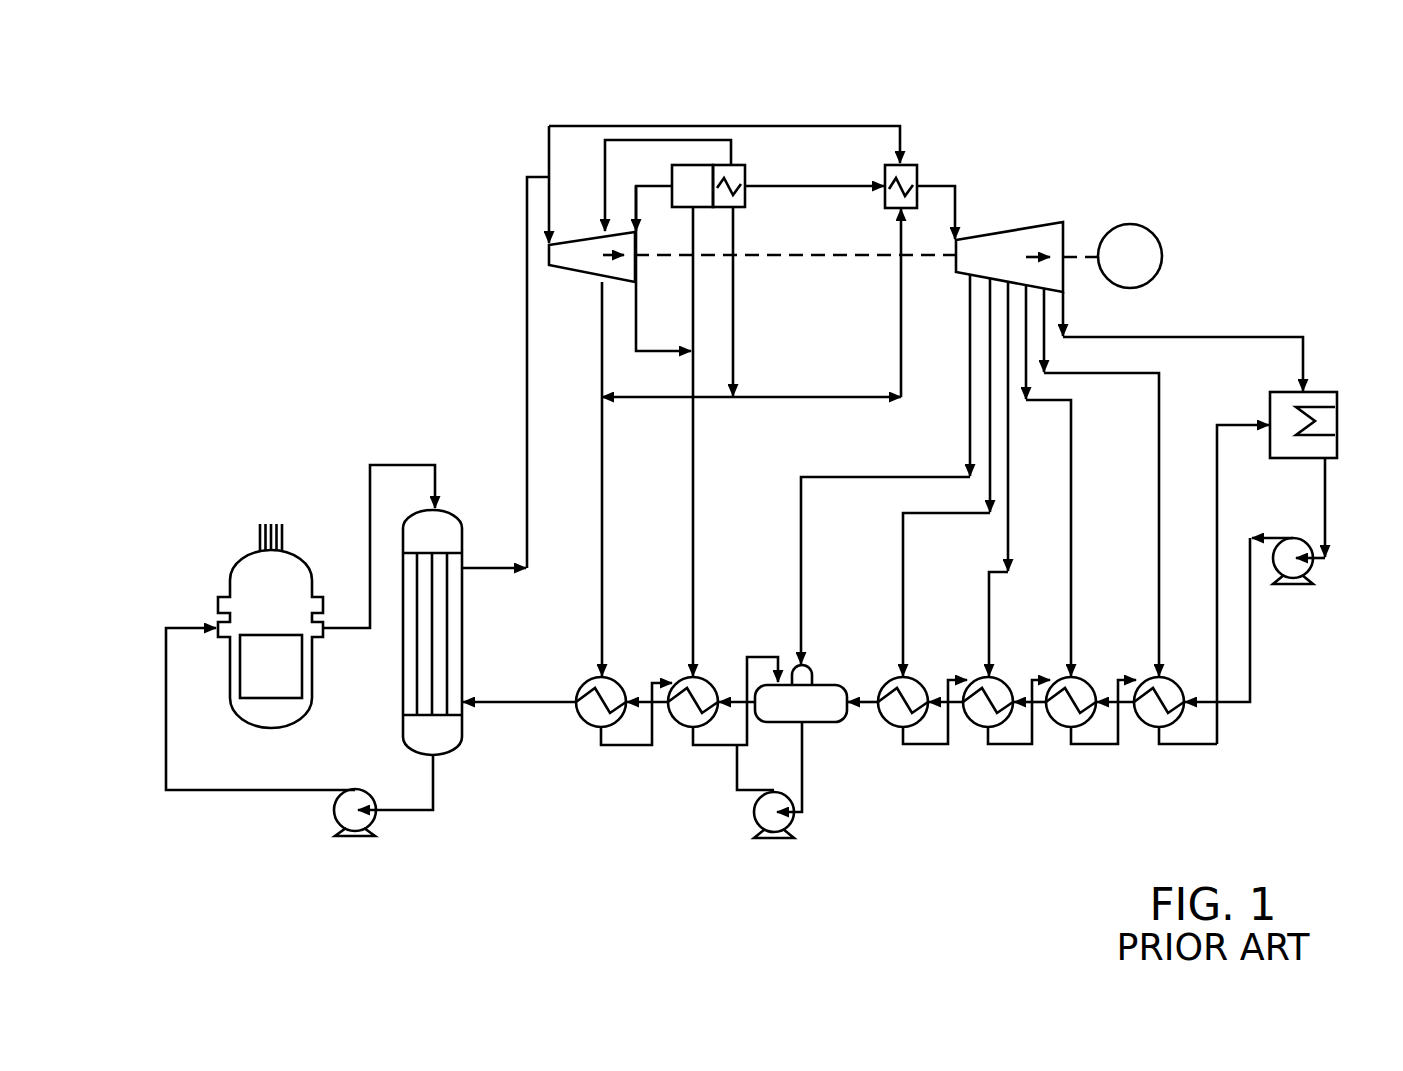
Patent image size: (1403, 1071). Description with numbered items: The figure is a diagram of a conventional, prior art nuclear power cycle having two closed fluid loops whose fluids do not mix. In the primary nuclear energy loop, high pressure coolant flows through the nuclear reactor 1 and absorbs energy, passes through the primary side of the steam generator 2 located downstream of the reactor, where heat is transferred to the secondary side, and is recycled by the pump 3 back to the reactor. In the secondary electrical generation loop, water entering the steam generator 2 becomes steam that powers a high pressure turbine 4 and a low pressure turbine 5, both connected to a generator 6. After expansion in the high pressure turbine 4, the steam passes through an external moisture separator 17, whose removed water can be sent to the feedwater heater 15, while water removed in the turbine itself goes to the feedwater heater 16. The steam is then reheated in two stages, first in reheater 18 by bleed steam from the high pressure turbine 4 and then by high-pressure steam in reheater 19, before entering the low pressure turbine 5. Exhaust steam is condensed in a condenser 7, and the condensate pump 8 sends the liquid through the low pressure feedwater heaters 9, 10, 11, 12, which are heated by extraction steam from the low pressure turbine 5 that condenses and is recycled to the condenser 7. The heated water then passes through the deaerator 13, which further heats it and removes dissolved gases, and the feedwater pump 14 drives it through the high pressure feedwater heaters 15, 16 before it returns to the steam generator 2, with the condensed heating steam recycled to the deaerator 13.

The nuclear reactor 1 is at (270, 626).
The steam generator 2 is at (463, 638).
The pump 3 is at (358, 838).
The high pressure turbine 4 is at (593, 237).
The low pressure turbine 5 is at (1050, 219).
The generator 6 is at (1163, 246).
The condenser 7 is at (1268, 408).
The condensate pump 8 is at (1280, 585).
The low pressure feedwater heater 9 is at (1147, 728).
The low pressure feedwater heater 10 is at (1058, 730).
The low pressure feedwater heater 11 is at (975, 728).
The low pressure feedwater heater 12 is at (890, 728).
The deaerator 13 is at (817, 725).
The feedwater pump 14 is at (780, 840).
The high pressure feedwater heater 15 is at (683, 730).
The high pressure feedwater heater 16 is at (595, 730).
The external moisture separator 17 is at (692, 186).
The reheater 18 is at (746, 181).
The reheater 19 is at (919, 181).